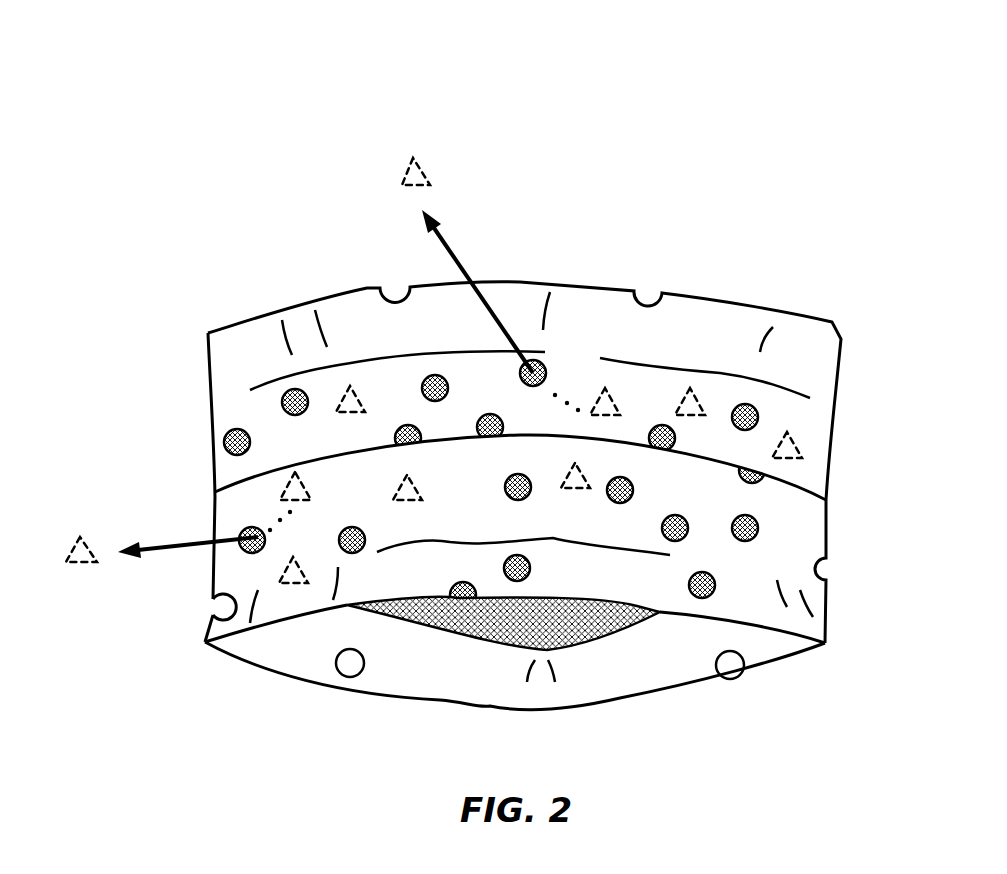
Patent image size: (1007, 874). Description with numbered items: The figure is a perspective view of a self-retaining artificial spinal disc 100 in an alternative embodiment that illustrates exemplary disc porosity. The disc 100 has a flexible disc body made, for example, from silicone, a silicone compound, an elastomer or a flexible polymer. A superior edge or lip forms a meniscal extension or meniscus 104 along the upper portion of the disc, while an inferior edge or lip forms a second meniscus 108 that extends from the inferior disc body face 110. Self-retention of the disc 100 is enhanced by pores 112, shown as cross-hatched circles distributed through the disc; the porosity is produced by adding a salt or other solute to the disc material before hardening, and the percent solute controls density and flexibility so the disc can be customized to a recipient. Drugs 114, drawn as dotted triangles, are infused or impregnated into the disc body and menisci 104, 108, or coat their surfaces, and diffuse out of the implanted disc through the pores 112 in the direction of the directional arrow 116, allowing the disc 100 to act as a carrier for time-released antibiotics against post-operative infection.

The self-retaining artificial spinal disc 100 is at (222, 116).
The superior meniscal extension 104 is at (723, 298).
The inferior meniscal extension 108 is at (283, 677).
The inferior disc body face 110 is at (455, 636).
The pores 112 is at (282, 404).
The drugs 114 is at (430, 185).
The directional arrow 116 is at (447, 249).